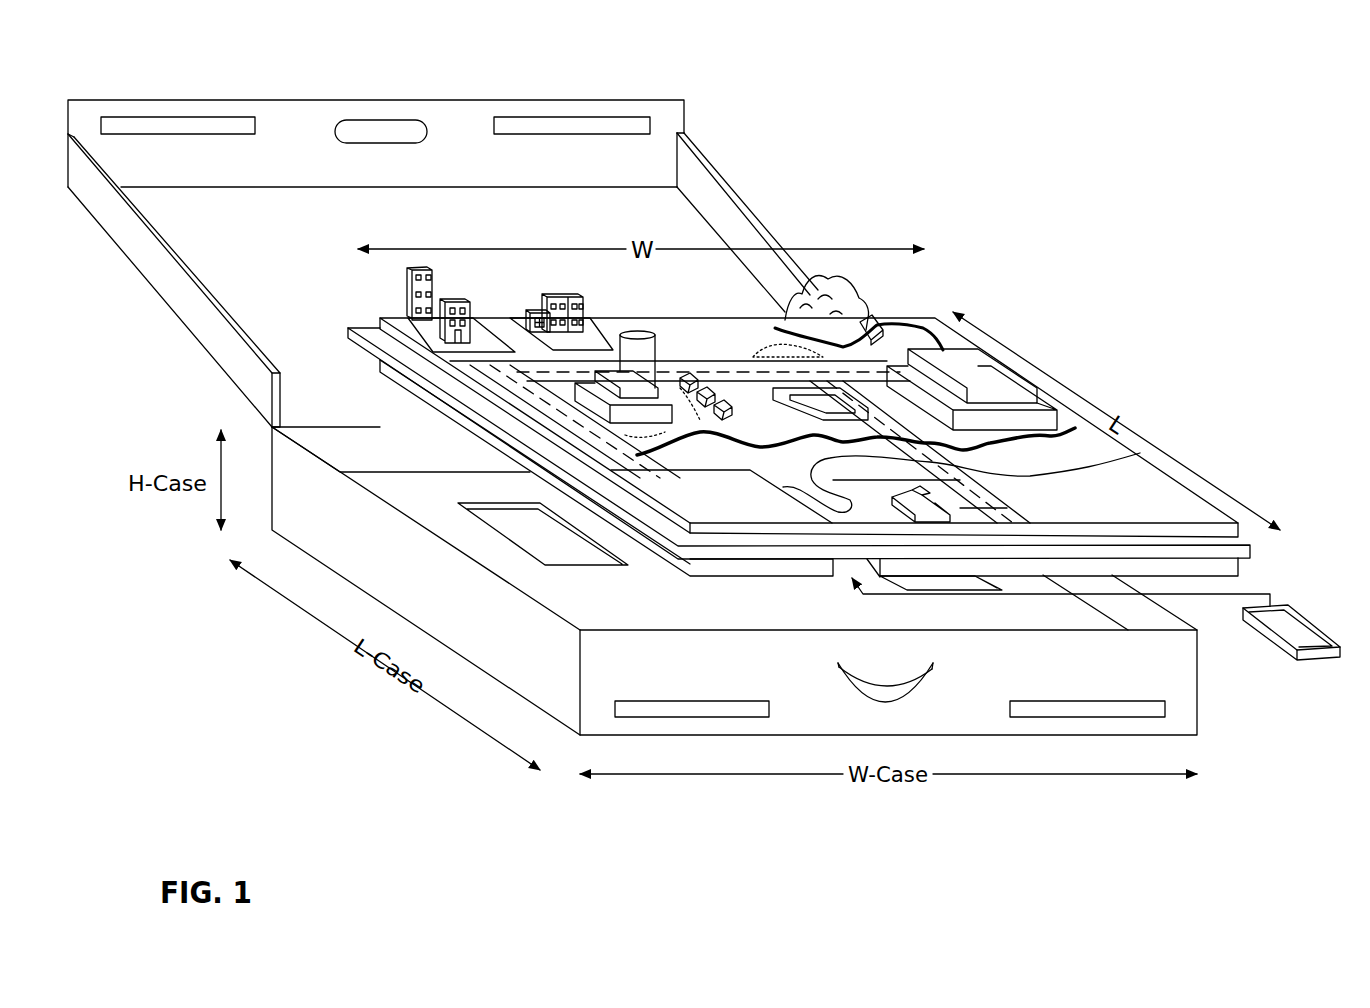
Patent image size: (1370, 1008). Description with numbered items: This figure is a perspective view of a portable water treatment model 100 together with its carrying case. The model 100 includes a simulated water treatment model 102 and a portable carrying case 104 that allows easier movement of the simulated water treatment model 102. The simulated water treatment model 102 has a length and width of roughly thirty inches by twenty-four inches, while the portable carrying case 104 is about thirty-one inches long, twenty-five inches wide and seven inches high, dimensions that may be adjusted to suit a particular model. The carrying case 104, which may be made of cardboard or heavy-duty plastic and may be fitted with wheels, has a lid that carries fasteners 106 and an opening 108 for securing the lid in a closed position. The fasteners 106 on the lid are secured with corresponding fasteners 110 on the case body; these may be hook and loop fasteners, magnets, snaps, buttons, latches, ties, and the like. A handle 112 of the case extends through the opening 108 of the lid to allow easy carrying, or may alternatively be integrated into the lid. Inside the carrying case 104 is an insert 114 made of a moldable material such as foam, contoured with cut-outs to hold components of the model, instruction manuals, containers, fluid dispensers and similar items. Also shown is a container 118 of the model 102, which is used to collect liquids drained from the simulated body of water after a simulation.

The model 100 is at (1042, 152).
The simulated water treatment model 102 is at (1167, 522).
The portable carrying case 104 is at (707, 161).
The fasteners 106 is at (225, 115).
The opening 108 is at (398, 120).
The fasteners 110 is at (720, 702).
The handle 112 is at (928, 690).
The insert 114 is at (470, 490).
The container 118 is at (1300, 612).